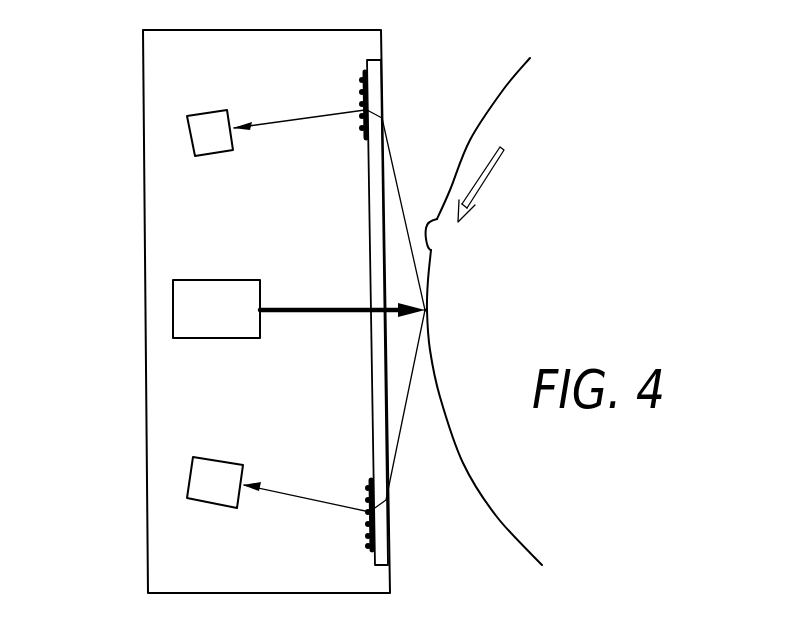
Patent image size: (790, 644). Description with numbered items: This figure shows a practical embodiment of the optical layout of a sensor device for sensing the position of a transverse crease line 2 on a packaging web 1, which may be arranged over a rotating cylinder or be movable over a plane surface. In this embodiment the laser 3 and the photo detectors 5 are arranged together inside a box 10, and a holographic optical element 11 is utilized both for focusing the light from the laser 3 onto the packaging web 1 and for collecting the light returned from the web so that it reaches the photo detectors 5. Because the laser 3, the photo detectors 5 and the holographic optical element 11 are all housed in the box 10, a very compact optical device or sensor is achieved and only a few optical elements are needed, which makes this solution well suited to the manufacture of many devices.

The packaging web 1 is at (429, 278).
The transverse crease line 2 is at (430, 230).
The laser 3 is at (187, 308).
The photo detectors 5 is at (202, 138).
The box 10 is at (145, 217).
The holographic optical element 11 is at (375, 210).